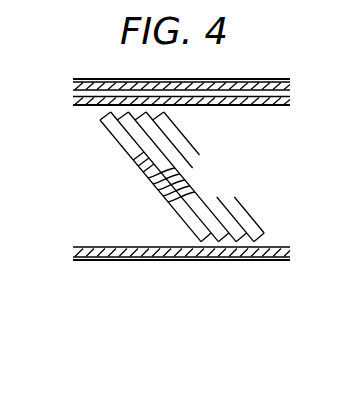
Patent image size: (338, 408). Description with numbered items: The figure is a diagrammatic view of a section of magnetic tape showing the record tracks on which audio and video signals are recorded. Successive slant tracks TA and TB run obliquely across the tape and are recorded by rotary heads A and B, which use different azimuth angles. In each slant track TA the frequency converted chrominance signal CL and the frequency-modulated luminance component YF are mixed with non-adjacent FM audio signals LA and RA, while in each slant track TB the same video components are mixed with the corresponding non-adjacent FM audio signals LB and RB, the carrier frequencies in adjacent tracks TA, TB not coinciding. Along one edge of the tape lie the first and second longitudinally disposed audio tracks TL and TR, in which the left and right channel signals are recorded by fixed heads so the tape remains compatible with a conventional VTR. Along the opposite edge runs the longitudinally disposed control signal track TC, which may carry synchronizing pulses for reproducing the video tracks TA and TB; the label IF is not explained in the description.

The first longitudinally disposed audio track TL is at (83, 88).
The second longitudinally disposed audio track TR is at (83, 102).
The slant track recorded by rotary head A TA is at (148, 142).
The slant track recorded by rotary head B TB is at (220, 211).
The control signal track TC is at (86, 250).
The interface IF is at (185, 261).